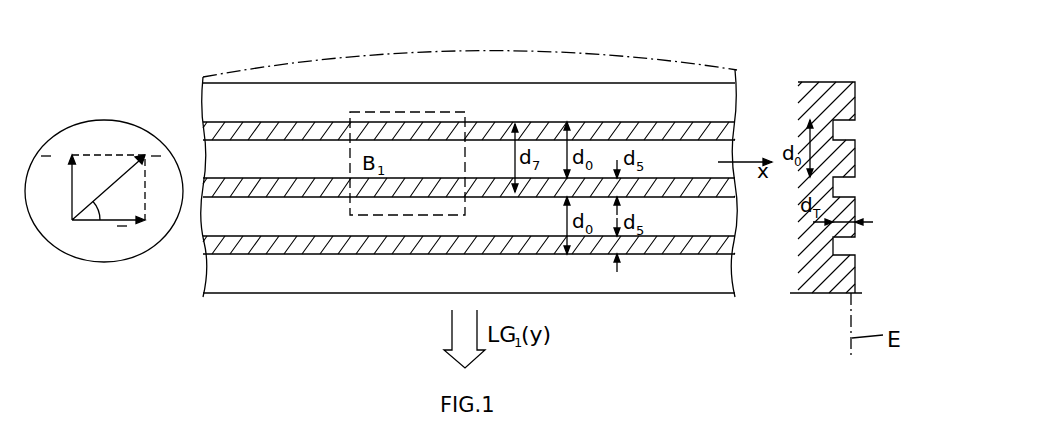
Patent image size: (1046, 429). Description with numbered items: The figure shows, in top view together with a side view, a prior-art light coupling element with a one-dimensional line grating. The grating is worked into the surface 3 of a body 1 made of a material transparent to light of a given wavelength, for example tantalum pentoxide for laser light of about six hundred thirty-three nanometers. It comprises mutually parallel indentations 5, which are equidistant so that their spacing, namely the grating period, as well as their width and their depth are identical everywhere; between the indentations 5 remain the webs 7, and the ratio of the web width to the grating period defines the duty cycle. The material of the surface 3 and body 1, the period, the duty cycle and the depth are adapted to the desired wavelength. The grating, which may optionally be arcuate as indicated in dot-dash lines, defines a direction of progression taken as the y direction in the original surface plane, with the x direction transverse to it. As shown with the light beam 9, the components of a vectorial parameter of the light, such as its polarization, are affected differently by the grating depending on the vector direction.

The body 1 is at (330, 278).
The surface 3 is at (432, 160).
The indentations 5 is at (282, 132).
The webs 7 is at (567, 93).
The light beam 9 is at (98, 248).